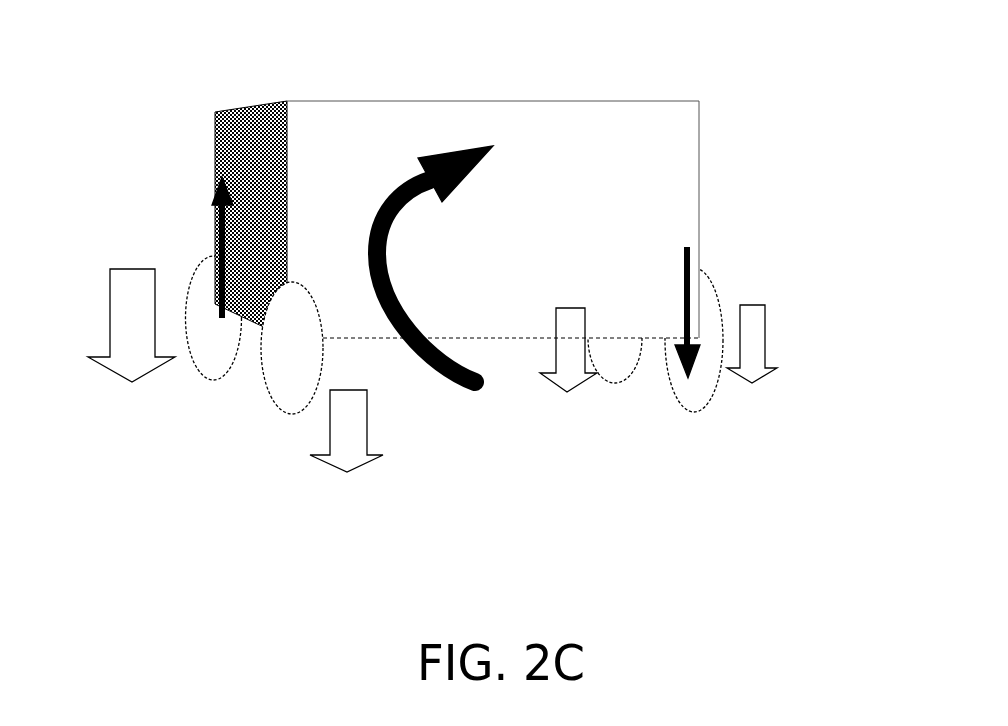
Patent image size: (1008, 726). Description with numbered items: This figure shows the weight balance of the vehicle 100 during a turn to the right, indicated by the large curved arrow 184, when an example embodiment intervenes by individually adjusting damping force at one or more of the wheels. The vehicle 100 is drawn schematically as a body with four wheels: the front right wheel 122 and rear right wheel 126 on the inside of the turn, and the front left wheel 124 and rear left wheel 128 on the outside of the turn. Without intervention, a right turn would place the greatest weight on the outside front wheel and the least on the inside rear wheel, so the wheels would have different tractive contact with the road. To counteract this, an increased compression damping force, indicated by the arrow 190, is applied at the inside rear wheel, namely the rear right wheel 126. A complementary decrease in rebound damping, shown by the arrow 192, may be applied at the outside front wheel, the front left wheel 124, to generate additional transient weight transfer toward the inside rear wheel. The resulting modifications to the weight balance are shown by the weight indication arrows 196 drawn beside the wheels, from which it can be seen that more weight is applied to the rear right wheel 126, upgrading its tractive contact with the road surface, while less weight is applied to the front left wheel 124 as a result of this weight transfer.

The vehicle 100 is at (457, 259).
The front right wheel 122 is at (608, 372).
The front left wheel 124 is at (197, 348).
The rear right wheel 126 is at (687, 372).
The rear left wheel 128 is at (275, 378).
The arrow indicating a turn to the right 184 is at (463, 205).
The arrow indicating increased compression damping force 190 is at (748, 293).
The arrow indicating decrease in rebound damping 192 is at (166, 236).
The weight indication arrows 196 is at (461, 378).